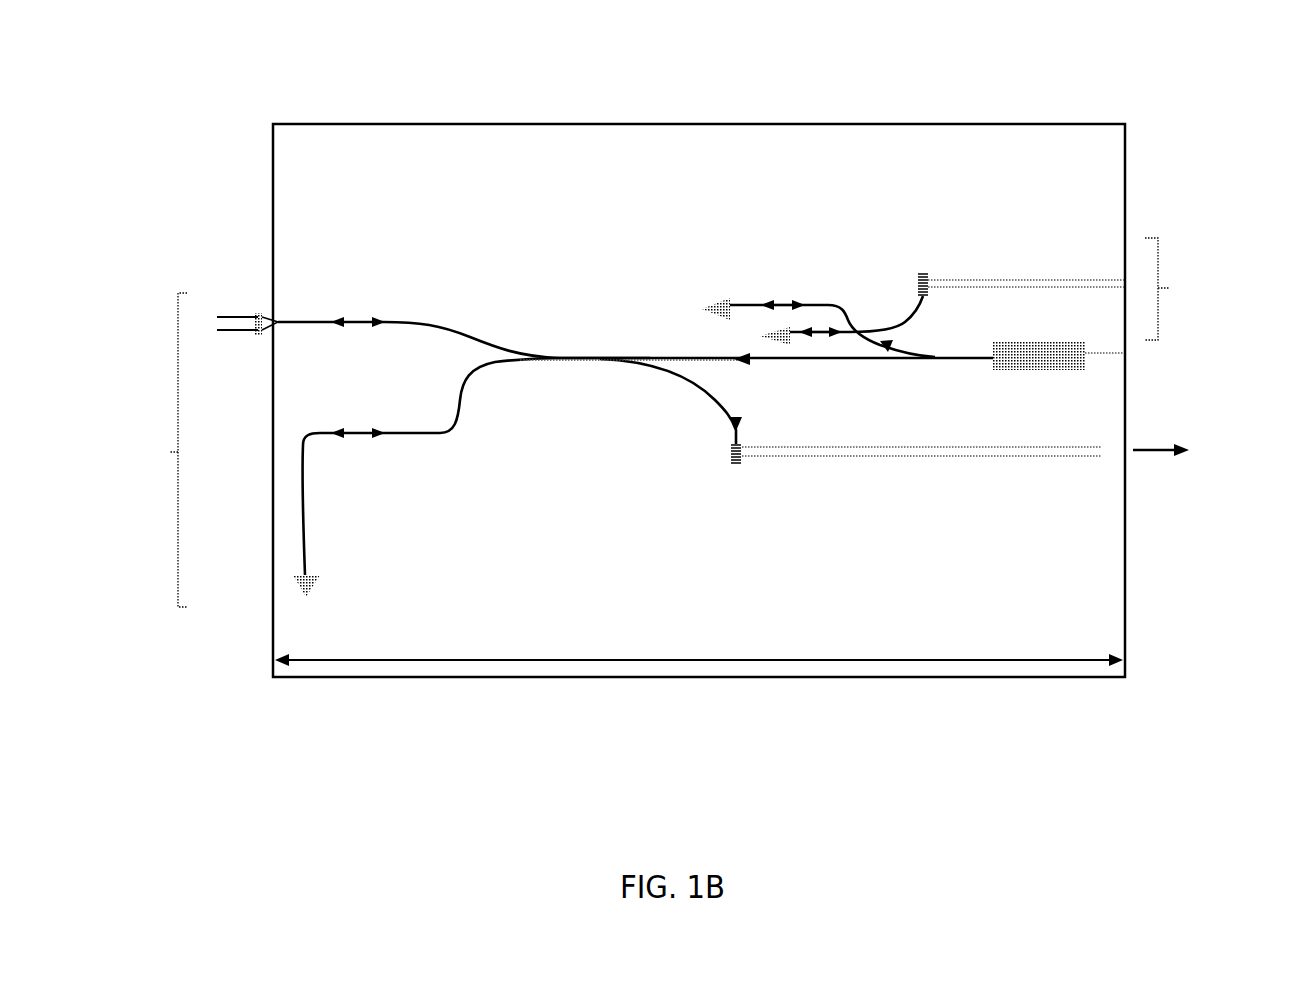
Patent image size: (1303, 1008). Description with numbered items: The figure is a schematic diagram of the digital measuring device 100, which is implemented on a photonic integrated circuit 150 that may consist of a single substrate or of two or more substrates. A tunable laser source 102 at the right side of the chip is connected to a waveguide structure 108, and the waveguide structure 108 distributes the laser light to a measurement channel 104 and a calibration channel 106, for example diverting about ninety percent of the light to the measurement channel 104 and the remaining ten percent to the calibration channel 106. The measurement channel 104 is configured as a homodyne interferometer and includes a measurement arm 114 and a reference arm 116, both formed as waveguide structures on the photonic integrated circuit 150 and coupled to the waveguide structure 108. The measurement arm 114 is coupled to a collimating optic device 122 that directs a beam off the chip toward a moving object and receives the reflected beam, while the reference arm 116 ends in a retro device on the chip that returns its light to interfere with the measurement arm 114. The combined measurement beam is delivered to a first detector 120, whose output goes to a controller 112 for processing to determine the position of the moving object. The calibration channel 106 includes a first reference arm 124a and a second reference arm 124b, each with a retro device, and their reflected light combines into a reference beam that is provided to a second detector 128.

The digital measuring device 100 is at (1168, 103).
The photonic integrated circuit 150 is at (418, 123).
The measurement channel 104 is at (152, 450).
The collimating optic device 122 is at (247, 308).
The measurement arm 114 is at (464, 321).
The reference arm 116 is at (471, 477).
The first detector 120 is at (851, 432).
The waveguide structure 108 is at (958, 360).
The first reference arm 124a is at (788, 327).
The second reference arm 124b is at (813, 323).
The second detector 128 is at (1011, 269).
The calibration channel 106 is at (1188, 289).
The tunable laser source 102 is at (1058, 389).
The controller 112 is at (1186, 450).